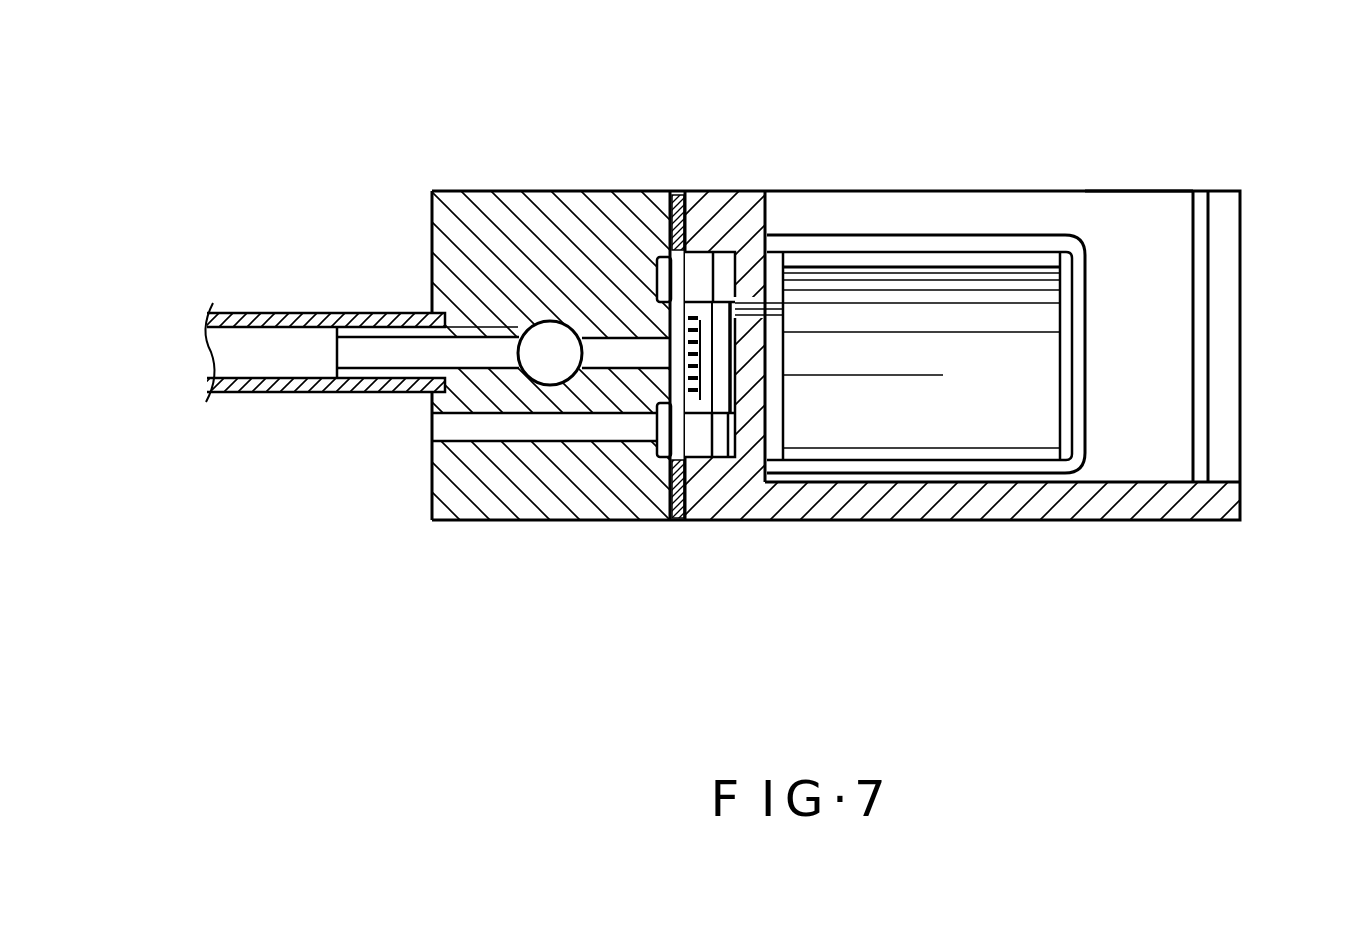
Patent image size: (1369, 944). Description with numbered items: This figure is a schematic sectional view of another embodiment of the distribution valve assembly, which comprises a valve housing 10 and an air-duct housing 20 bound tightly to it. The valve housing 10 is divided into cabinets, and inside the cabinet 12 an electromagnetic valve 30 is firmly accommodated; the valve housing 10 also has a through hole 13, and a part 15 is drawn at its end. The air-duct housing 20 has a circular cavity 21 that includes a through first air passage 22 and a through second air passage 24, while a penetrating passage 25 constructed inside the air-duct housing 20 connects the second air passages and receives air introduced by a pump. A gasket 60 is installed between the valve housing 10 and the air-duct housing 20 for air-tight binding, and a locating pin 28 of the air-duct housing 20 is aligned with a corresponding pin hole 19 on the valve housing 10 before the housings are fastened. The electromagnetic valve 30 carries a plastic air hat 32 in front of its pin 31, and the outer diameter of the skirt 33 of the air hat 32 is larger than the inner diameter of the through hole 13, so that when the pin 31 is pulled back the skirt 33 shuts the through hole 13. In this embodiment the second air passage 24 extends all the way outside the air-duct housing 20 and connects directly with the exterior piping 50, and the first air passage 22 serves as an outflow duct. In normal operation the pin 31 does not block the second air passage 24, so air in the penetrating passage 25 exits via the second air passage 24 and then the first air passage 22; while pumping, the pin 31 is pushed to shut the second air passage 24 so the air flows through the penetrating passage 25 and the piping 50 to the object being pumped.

The valve housing 10 is at (1094, 505).
The cabinet 12 is at (1143, 230).
The through hole 13 is at (787, 303).
The end plate 15 is at (1243, 262).
The pin hole 19 is at (683, 217).
The air-duct housing 20 is at (495, 498).
The circular cavity 21 is at (657, 437).
The first air passage 22 is at (568, 437).
The second air passage 24 is at (393, 347).
The penetrating passage 25 is at (544, 338).
The locating pin 28 is at (677, 215).
The electromagnetic valve 30 is at (987, 298).
The pin 31 is at (735, 355).
The air hat 32 is at (707, 300).
The skirt 33 is at (728, 435).
The piping 50 is at (255, 313).
The gasket 60 is at (678, 470).